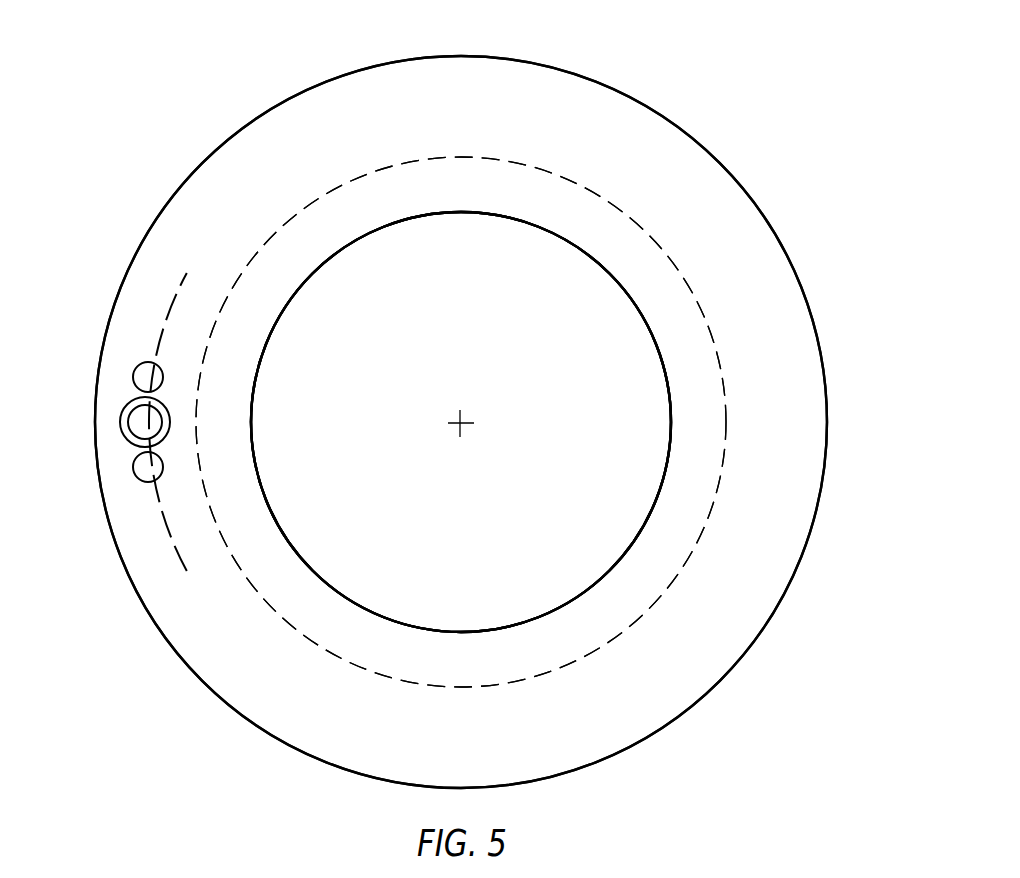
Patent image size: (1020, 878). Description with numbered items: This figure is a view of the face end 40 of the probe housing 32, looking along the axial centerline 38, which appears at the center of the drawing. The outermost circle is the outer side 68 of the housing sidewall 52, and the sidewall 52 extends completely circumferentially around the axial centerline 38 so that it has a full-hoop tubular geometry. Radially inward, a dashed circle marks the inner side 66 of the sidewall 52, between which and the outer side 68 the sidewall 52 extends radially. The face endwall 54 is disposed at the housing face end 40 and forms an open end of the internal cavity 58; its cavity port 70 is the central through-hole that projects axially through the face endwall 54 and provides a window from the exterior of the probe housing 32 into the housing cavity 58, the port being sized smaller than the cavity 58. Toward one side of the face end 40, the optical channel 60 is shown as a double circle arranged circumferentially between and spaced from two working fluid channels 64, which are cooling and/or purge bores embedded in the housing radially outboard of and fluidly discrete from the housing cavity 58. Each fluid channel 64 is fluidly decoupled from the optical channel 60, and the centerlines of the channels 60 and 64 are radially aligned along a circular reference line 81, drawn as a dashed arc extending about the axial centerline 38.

The probe housing 32 is at (792, 90).
The axial centerline 38 is at (463, 429).
The face end 40 is at (756, 215).
The housing sidewall 52 is at (472, 170).
The housing face-end endwall 54 is at (390, 240).
The internal cavity 58 is at (466, 370).
The optical channel 60 is at (114, 423).
The working fluid channels 64 is at (132, 373).
The inner side of the sidewall 66 is at (618, 213).
The outer side of the sidewall 68 is at (678, 126).
The cavity port 70 is at (651, 323).
The circular reference line 81 is at (177, 566).